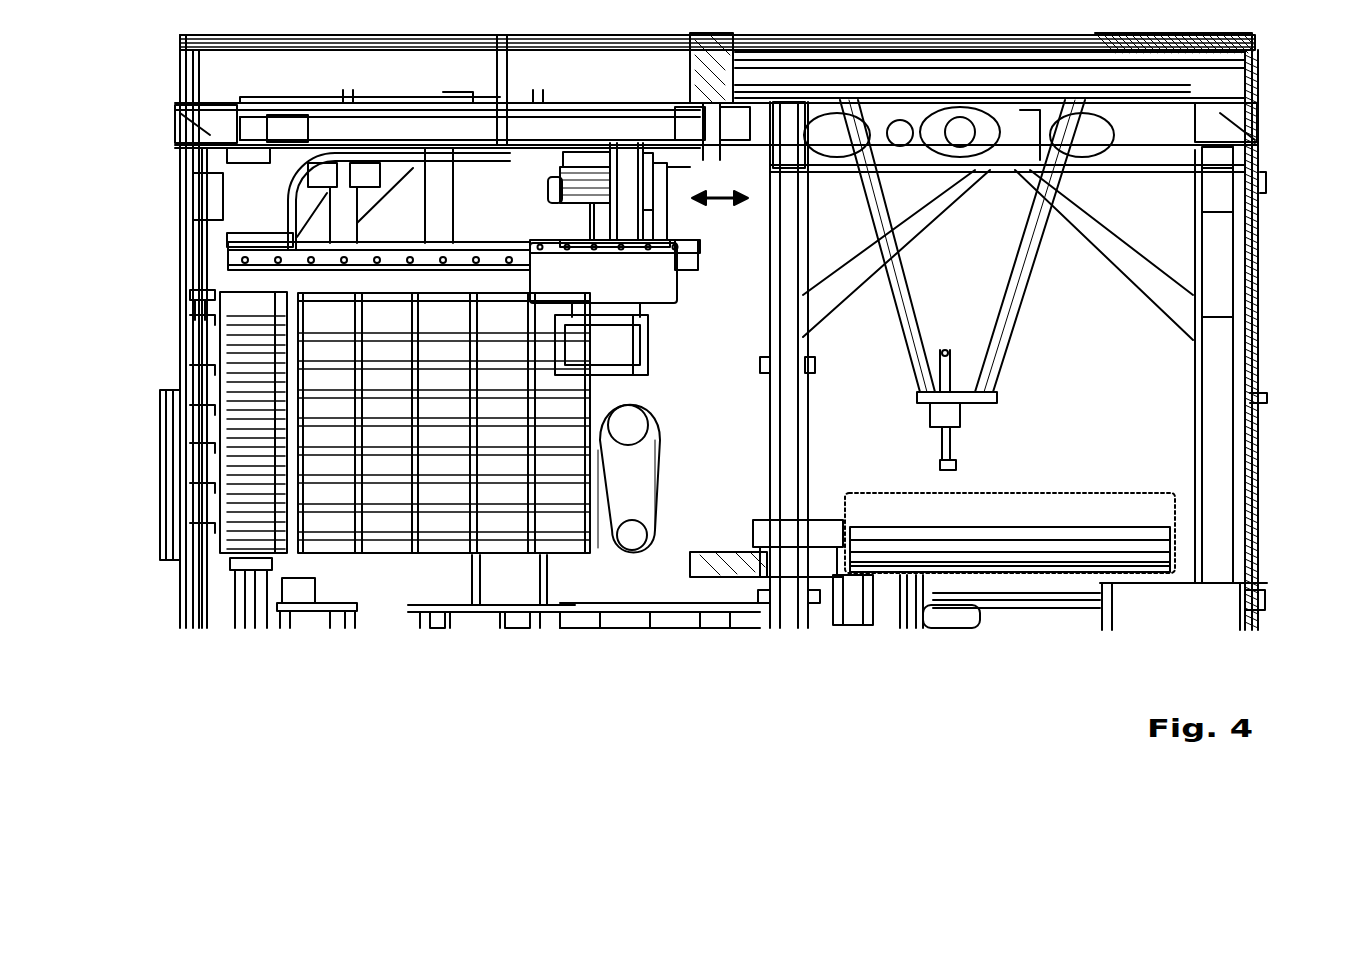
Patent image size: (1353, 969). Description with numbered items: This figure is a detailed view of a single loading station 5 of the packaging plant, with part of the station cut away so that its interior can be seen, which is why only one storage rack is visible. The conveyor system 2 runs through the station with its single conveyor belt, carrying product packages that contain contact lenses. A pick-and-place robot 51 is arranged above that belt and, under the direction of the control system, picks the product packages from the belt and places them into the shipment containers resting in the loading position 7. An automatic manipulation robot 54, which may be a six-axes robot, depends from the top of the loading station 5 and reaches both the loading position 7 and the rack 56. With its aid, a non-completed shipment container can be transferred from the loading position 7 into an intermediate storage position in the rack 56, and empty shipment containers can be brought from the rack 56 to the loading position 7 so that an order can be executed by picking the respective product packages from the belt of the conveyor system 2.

The conveyor system 2 is at (1093, 478).
The loading station 5 is at (1303, 553).
The loading position 7 is at (826, 596).
The pick-and-place robot 51 is at (953, 478).
The automatic manipulation robot 54 is at (658, 391).
The rack 56 is at (390, 578).